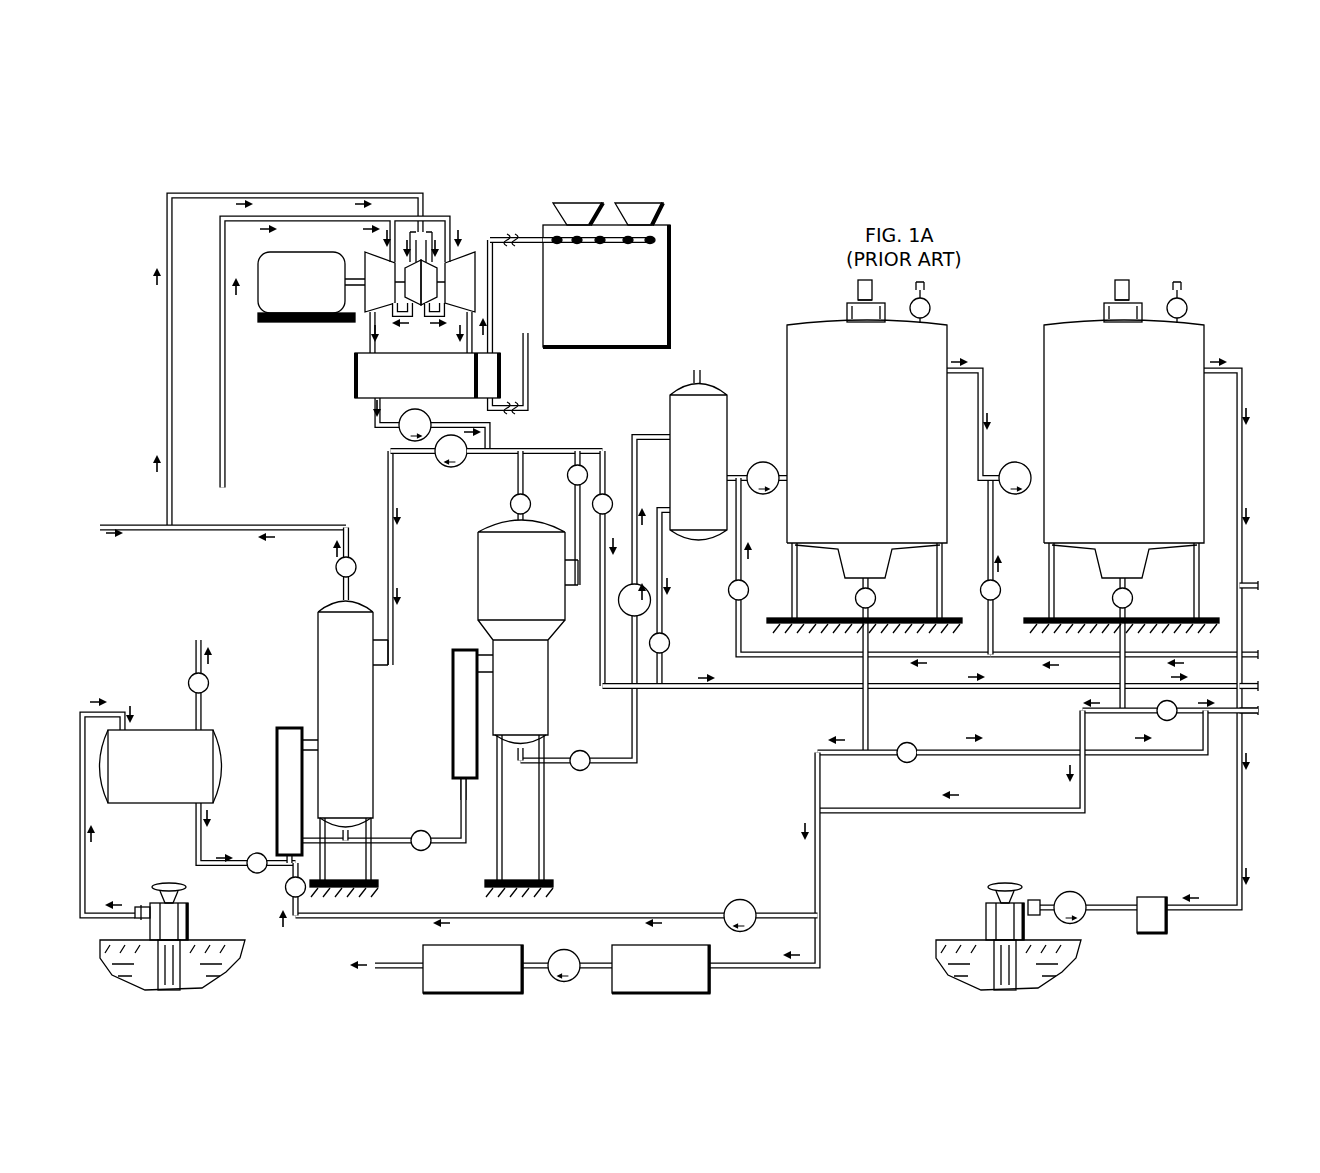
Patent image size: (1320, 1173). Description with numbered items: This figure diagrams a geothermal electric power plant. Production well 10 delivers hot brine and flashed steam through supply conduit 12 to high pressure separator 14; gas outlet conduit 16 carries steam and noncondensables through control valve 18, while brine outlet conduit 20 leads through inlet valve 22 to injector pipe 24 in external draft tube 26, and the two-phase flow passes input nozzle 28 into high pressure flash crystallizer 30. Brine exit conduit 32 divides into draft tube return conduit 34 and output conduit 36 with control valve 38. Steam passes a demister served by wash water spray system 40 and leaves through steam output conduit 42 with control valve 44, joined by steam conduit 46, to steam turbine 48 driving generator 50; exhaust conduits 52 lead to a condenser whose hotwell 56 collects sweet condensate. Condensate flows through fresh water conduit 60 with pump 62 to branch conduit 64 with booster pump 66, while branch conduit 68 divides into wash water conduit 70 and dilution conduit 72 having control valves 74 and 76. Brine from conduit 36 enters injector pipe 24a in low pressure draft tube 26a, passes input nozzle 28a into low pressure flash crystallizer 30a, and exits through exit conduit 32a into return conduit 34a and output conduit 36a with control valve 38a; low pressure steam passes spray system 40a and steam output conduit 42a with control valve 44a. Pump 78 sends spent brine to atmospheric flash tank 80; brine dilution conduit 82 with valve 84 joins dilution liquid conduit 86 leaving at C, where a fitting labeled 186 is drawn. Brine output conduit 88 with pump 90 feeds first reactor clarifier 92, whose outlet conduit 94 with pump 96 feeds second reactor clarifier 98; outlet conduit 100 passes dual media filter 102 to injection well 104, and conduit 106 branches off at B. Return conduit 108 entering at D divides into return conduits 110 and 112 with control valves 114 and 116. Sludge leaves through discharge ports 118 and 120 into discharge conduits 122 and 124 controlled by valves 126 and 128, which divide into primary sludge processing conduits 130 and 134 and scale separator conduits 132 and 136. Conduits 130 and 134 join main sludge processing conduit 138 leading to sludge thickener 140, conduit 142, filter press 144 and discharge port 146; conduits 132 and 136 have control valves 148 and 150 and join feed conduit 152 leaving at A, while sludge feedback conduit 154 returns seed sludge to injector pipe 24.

The production well 10 is at (204, 928).
The supply conduit 12 is at (90, 850).
The high pressure separator 14 is at (154, 779).
The gas outlet conduit 16 is at (194, 726).
The control valve 18 is at (186, 680).
The hot brine outlet conduit 20 is at (250, 854).
The inlet valve 22 is at (268, 882).
The injector pipe 24 is at (278, 848).
The high pressure external draft tube 26 is at (276, 742).
The input nozzle 28 is at (306, 727).
The high pressure flash crystallizer 30 is at (377, 723).
The brine exit conduit 32 is at (365, 825).
The draft tube return conduit 34 is at (330, 850).
The output conduit 36 is at (460, 822).
The control valve 38 is at (431, 850).
The high pressure wash water spray system 40 is at (398, 649).
The high pressure steam output conduit 42 is at (167, 384).
The control valve 44 is at (335, 568).
The high pressure steam conduit 46 is at (115, 525).
The steam turbine 48 is at (445, 211).
The electric power generator 50 is at (300, 292).
The exhaust conduits 52 is at (368, 344).
The hotwell 56 is at (356, 399).
The fresh water conduit 60 is at (390, 431).
The pump 62 is at (420, 422).
The high pressure wash water branch conduit 64 is at (466, 455).
The booster pump 66 is at (442, 462).
The second fresh water branch conduit 68 is at (518, 450).
The low pressure wash water conduit 70 is at (574, 538).
The scale separator fresh water dilution conduit 72 is at (598, 450).
The control valve 74 is at (568, 472).
The control valve 76 is at (606, 495).
The pump 78 is at (630, 614).
The atmospheric flash tank 80 is at (686, 467).
The brine dilution conduit 82 is at (662, 563).
The valve 84 is at (670, 644).
The dilution liquid conduit 86 is at (931, 673).
The brine output conduit 88 is at (734, 470).
The pump 90 is at (763, 460).
The first reactor clarifier 92 is at (784, 357).
The outlet conduit 94 is at (984, 378).
The pump 96 is at (1018, 462).
The second reactor clarifier 98 is at (1107, 456).
The outlet conduit 100 is at (1244, 468).
The dual media filter 102 is at (1149, 898).
The injection well 104 is at (1008, 914).
The conduit 106 is at (1255, 588).
The return conduit 108 is at (1017, 656).
The return conduit 110 is at (740, 542).
The return conduit 112 is at (997, 547).
The control valve 114 is at (750, 593).
The control valve 116 is at (1002, 593).
The gravity discharge port 118 is at (874, 579).
The gravity discharge port 120 is at (1146, 579).
The discharge conduit 122 is at (874, 602).
The discharge conduit 124 is at (1130, 602).
The control valve 126 is at (854, 597).
The control valve 128 is at (1112, 606).
The primary sludge processing conduit 130 is at (835, 758).
The scale separator conduit 132 is at (900, 760).
The primary sludge processing conduit 134 is at (1078, 725).
The scale separator conduit 136 is at (1140, 716).
The main sludge processing conduit 138 is at (820, 866).
The sludge thickener 140 is at (670, 945).
The conduit 142 is at (589, 955).
The filter press 144 is at (485, 945).
The port 146 is at (400, 963).
The control valve 148 is at (914, 744).
The control valve 150 is at (1162, 720).
The silica seed/scale feed conduit 152 is at (1257, 719).
The sludge feedback conduit 154 is at (806, 911).
The tee C 186 is at (1260, 683).
The injector pipe 24a is at (460, 776).
The low pressure external draft tube 26a is at (452, 704).
The input nozzle 28a is at (476, 654).
The low pressure flash crystallizer 30a is at (470, 576).
The exit conduit 32a is at (546, 748).
The return conduit 34a is at (504, 768).
The output conduit 36a is at (638, 714).
The control valve 38a is at (592, 768).
The wash water spray system 40a is at (582, 586).
The low pressure steam output conduit 42a is at (516, 515).
The control valve 44a is at (509, 504).